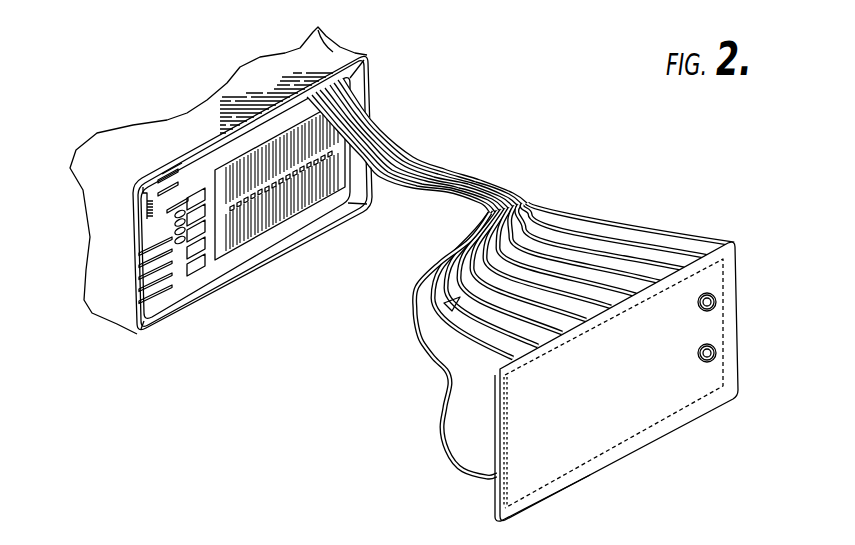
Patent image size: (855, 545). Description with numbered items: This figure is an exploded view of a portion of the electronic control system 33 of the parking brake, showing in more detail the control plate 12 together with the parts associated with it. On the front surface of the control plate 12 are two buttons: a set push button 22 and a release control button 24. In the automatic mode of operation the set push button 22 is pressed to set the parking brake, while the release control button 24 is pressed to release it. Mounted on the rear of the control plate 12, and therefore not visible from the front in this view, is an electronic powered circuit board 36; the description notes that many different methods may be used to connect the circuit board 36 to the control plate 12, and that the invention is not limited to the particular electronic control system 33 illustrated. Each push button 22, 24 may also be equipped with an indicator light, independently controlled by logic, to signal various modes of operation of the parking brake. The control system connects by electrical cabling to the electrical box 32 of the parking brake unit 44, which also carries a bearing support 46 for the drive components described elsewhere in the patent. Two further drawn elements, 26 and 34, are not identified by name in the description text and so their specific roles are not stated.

The control plate 12 is at (680, 400).
The set push button 22 is at (715, 302).
The release control button 24 is at (716, 355).
The connecting wire 26 is at (443, 447).
The electrical box 32 is at (333, 53).
The electronic control system 33 is at (139, 82).
The ribbon cable 34 is at (397, 140).
The circuit board 36 is at (722, 248).
The unit 44 is at (62, 544).
The bearing support 46 is at (262, 540).